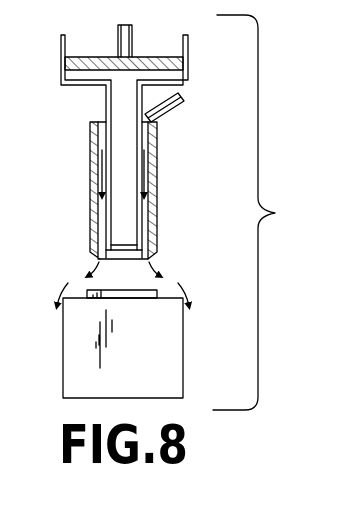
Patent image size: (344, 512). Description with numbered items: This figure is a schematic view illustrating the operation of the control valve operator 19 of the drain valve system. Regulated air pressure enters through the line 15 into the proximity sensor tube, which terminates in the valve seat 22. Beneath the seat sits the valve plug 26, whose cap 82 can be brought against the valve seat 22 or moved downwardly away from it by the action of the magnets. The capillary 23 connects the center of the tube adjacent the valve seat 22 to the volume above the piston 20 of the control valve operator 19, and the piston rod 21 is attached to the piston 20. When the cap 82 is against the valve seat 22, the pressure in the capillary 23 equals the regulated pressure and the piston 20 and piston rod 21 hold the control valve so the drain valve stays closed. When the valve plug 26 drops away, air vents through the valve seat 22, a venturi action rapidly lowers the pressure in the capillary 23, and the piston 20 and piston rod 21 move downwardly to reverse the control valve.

The operator 19 is at (188, 76).
The piston 20 is at (100, 57).
The piston rod 21 is at (132, 44).
The line 15 is at (172, 107).
The capillary 23 is at (97, 148).
The valve seat 22 is at (152, 256).
The cap 82 is at (110, 290).
The valve plug 26 is at (65, 338).